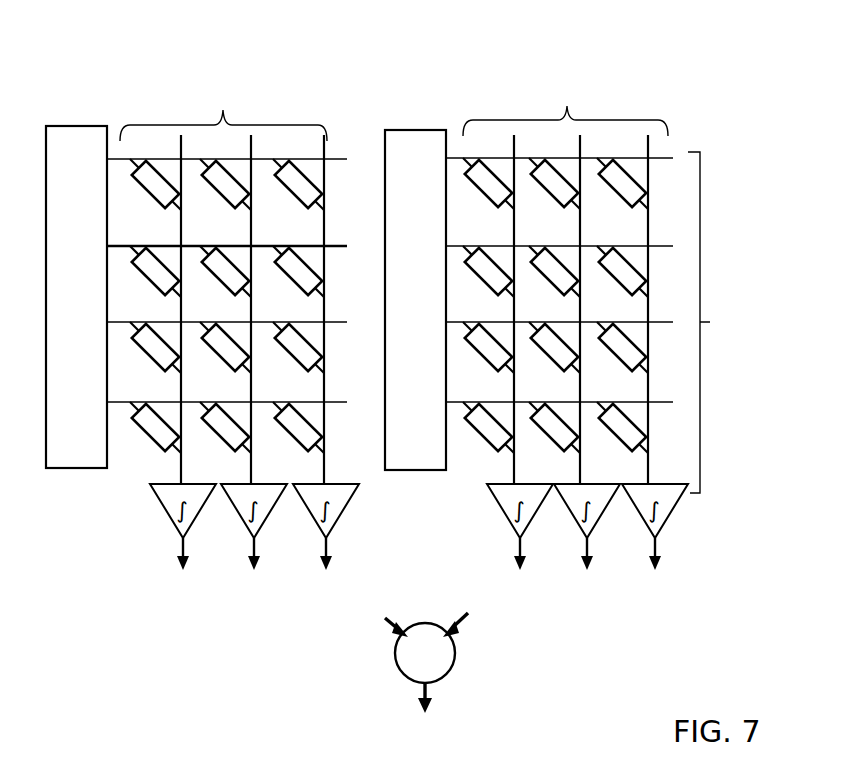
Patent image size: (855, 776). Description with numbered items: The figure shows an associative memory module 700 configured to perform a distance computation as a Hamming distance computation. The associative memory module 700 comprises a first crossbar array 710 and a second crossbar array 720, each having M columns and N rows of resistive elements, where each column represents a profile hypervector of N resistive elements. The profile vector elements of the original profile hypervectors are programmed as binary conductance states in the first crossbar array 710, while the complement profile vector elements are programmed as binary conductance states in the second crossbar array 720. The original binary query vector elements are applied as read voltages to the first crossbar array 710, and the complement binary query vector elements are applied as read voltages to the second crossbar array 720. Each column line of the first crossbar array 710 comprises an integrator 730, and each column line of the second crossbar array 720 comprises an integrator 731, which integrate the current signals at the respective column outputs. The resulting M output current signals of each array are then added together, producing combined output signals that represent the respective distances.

The associative memory module 700 is at (787, 694).
The first crossbar array 710 is at (122, 110).
The second crossbar array 720 is at (681, 97).
The integrator 730 is at (170, 504).
The integrator 731 is at (657, 528).